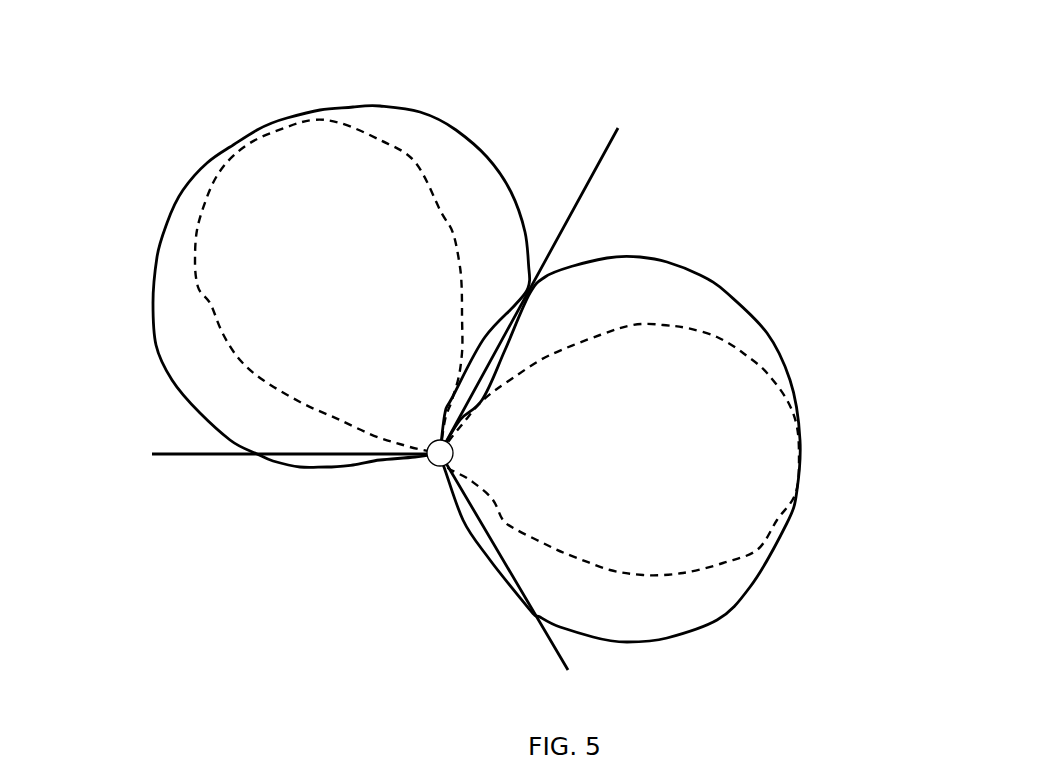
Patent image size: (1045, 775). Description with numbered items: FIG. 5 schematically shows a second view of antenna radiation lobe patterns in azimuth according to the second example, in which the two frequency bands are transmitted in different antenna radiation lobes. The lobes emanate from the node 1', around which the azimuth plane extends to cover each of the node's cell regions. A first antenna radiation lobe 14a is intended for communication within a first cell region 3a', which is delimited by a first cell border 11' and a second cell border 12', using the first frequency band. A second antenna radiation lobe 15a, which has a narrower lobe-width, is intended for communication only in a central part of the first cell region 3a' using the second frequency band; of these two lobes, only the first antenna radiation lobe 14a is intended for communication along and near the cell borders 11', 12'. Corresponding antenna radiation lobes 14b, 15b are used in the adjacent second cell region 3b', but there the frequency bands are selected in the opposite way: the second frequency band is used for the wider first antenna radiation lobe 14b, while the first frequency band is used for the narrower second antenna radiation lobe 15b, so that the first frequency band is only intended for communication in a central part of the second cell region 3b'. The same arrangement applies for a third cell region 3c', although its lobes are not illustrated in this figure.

The first antenna radiation lobe 14a is at (385, 107).
The second antenna radiation lobe 15a is at (417, 160).
The first antenna radiation lobe 14b is at (665, 262).
The second antenna radiation lobe 15b is at (687, 328).
The first cell border 11' is at (529, 363).
The second cell border 12' is at (268, 504).
The node 1' is at (395, 500).
The first cell region 3a' is at (127, 100).
The second cell region 3b' is at (676, 125).
The third cell region 3c' is at (191, 625).